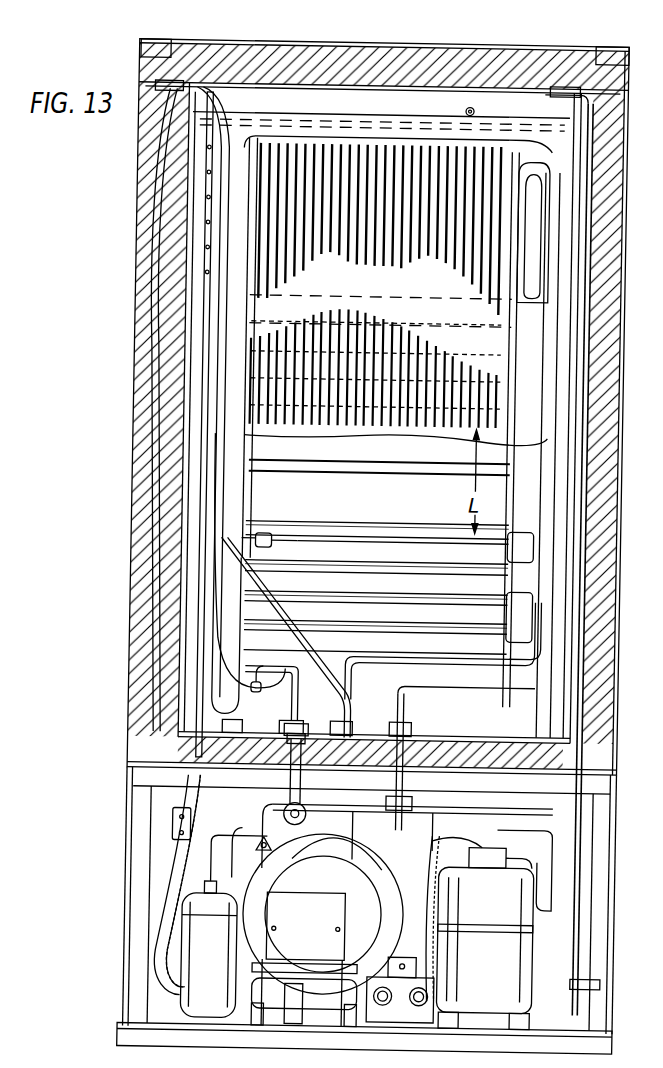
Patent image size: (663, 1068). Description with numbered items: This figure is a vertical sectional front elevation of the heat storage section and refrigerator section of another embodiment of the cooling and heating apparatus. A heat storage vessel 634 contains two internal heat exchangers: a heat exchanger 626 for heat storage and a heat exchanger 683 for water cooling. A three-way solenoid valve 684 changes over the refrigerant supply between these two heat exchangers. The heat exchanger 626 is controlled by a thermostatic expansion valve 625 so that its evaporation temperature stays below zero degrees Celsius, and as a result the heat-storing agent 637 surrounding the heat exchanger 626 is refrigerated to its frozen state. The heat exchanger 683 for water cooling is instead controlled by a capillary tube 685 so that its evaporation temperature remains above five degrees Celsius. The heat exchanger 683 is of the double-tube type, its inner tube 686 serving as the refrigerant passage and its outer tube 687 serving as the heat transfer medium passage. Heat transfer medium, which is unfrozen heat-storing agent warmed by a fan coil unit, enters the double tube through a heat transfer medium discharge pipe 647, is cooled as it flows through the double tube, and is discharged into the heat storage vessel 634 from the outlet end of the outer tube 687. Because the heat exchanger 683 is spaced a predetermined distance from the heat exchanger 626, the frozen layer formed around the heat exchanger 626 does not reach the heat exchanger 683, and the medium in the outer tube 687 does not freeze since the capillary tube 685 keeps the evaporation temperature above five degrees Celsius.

The thermostatic expansion valve 625 is at (314, 795).
The heat exchanger for heat storage 626 is at (262, 194).
The heat storage vessel 634 is at (195, 236).
The heat-storing agent 637 is at (234, 122).
The heat transfer medium discharge pipe 647 is at (409, 708).
The heat exchanger for water cooling 683 is at (394, 562).
The three-way solenoid valve 684 is at (279, 852).
The capillary tube 685 is at (356, 738).
The inner tube 686 is at (262, 535).
The outer tube 687 is at (300, 540).